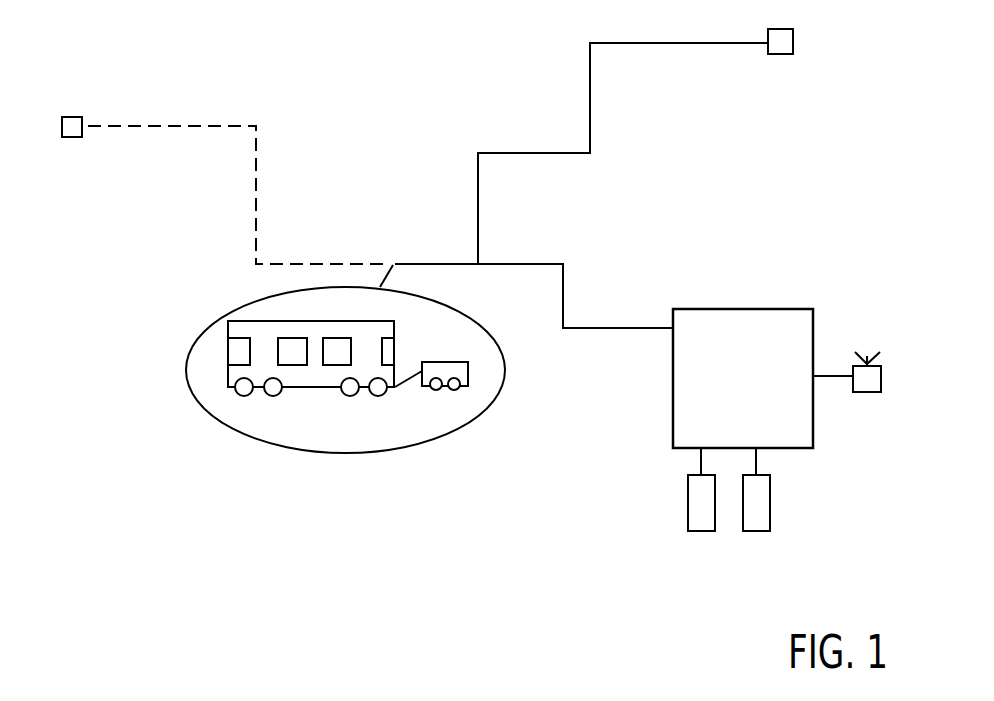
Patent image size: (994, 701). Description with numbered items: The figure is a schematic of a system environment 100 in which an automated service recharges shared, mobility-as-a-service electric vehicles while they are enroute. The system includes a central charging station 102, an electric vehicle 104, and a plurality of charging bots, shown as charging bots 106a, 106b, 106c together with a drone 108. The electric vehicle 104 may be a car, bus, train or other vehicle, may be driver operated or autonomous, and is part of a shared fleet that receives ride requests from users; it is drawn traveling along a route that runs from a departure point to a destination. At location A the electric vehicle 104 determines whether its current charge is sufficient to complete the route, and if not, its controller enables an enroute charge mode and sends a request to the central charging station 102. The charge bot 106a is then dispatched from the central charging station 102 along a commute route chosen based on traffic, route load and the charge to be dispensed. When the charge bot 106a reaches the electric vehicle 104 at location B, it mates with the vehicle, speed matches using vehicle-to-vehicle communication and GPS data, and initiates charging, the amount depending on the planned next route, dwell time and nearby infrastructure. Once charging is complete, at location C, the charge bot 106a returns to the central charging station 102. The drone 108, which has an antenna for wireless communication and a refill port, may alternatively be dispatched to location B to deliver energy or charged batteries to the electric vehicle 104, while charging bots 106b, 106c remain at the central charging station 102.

The system environment 100 is at (77, 52).
The central charging station 102 is at (745, 309).
The electric vehicle 104 is at (227, 387).
The charging bot 106a is at (444, 384).
The charging bot 106b is at (690, 531).
The charging bot 106c is at (768, 531).
The drone 108 is at (858, 392).
The location A is at (585, 62).
The location B is at (391, 259).
The location C is at (262, 170).